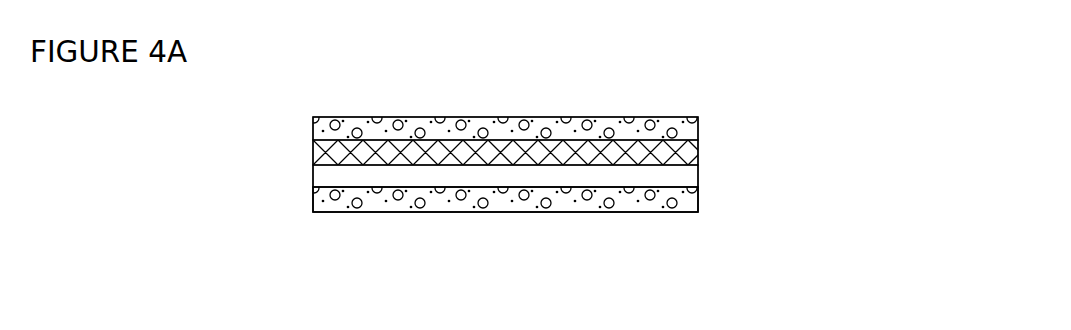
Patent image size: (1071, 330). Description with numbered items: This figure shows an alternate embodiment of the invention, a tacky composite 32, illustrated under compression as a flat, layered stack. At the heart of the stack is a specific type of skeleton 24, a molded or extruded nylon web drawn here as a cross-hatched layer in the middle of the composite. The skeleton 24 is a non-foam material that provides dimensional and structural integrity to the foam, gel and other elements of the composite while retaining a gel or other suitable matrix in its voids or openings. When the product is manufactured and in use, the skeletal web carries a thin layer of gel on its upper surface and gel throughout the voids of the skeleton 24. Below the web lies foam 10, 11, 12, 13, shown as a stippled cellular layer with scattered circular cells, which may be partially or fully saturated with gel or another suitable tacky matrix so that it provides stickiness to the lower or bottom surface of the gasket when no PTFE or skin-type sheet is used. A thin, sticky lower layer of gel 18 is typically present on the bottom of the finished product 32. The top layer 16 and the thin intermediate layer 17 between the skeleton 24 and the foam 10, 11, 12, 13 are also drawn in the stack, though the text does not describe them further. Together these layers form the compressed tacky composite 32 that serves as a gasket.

The tacky composite 32 is at (763, 100).
The first cellular foam layer 16 is at (660, 116).
The skeleton 24 is at (698, 150).
The film layer 17 is at (698, 177).
The lower layer of gel 18 is at (663, 212).
The foam 10 is at (409, 187).
The foam 11 is at (409, 187).
The foam 12 is at (409, 187).
The foam 13 is at (313, 200).